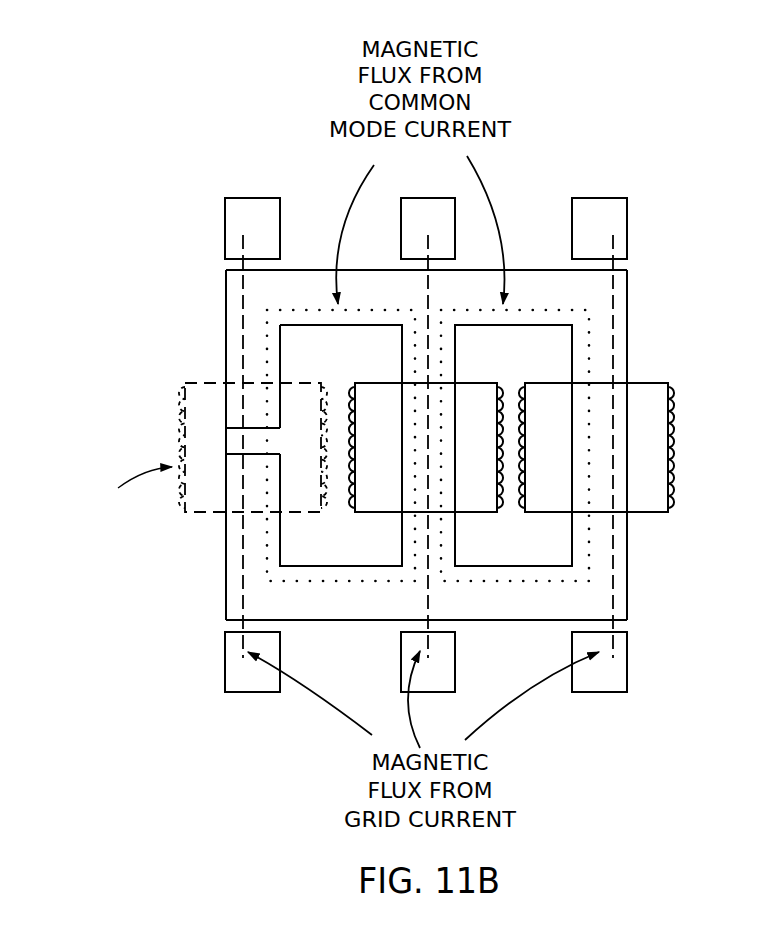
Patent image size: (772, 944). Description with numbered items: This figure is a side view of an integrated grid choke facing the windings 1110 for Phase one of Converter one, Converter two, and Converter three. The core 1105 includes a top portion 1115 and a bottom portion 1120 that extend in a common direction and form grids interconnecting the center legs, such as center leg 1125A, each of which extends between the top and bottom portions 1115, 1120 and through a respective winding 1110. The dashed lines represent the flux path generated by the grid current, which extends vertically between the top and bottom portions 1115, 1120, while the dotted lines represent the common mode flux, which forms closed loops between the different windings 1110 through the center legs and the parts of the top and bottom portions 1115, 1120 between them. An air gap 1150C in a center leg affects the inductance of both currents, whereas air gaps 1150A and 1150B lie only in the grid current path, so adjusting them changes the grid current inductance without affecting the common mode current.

The core 1105 is at (313, 446).
The windings 1110 is at (178, 412).
The top portion 1115 is at (646, 293).
The bottom portion 1120 is at (641, 588).
The center leg 1125A is at (220, 376).
The air gap 1150A is at (224, 265).
The air gap 1150B is at (224, 622).
The air gap 1150C is at (227, 443).